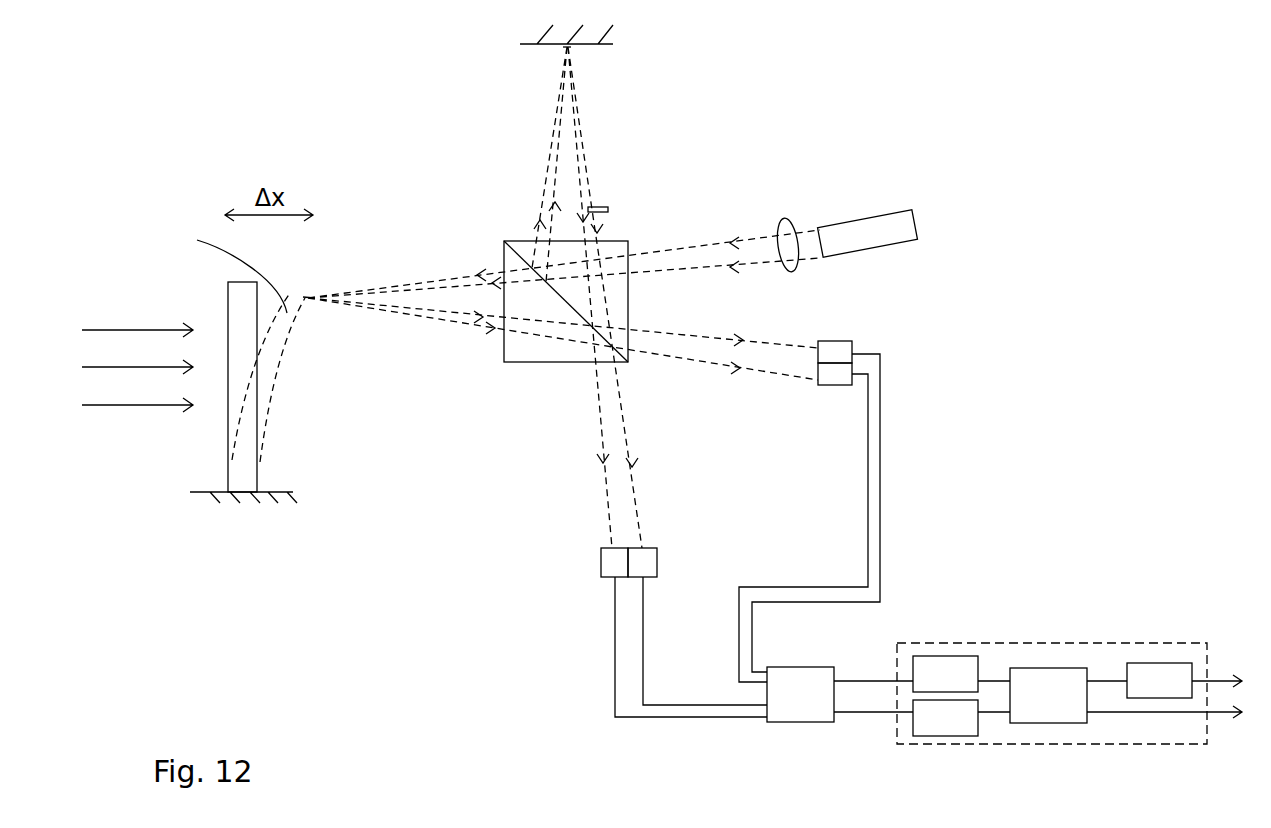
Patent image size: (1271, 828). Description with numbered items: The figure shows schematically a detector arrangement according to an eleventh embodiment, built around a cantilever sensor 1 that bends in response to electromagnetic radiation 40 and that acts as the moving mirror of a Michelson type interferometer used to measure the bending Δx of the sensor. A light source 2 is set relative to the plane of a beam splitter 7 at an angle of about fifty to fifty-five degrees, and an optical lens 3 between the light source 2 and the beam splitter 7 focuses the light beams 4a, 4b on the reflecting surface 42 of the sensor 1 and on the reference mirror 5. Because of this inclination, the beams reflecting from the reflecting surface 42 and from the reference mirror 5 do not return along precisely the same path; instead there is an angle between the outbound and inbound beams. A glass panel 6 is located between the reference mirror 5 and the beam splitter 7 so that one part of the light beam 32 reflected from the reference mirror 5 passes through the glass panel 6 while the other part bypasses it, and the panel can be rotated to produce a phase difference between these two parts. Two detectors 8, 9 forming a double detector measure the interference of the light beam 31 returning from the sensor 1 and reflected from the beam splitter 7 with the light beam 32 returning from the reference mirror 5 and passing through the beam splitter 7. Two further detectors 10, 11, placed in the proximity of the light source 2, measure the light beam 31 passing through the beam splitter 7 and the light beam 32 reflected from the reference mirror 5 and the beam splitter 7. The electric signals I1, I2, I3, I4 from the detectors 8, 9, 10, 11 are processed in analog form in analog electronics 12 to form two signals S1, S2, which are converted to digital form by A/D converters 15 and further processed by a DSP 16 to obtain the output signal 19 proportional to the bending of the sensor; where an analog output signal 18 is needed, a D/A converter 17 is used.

The cantilever sensor 1 is at (240, 303).
The light source 2 is at (888, 230).
The optical lens 3 is at (790, 224).
The light beam 4a is at (307, 303).
The light beam 4b is at (570, 50).
The reference mirror 5 is at (542, 45).
The glass panel 6 is at (603, 208).
The beam splitter 7 is at (533, 362).
The detector 8 is at (606, 562).
The detector 9 is at (643, 565).
The detector 10 is at (833, 378).
The detector 11 is at (833, 348).
The analog electronics 12 is at (803, 713).
The A/D converters 15 is at (930, 655).
The DSP 16 is at (1052, 713).
The D/A converter 17 is at (1157, 662).
The analog output signal 18 is at (1217, 677).
The output signal 19 is at (1218, 717).
The light beam 31 is at (433, 318).
The light beam 32 is at (580, 133).
The electromagnetic radiation 40 is at (107, 388).
The reflecting surface 42 is at (282, 357).
The electric signal I1 is at (613, 652).
The electric signal I2 is at (645, 662).
The electric signal I3 is at (767, 585).
The electric signal I4 is at (818, 602).
The signal S1 is at (993, 678).
The signal S2 is at (993, 713).